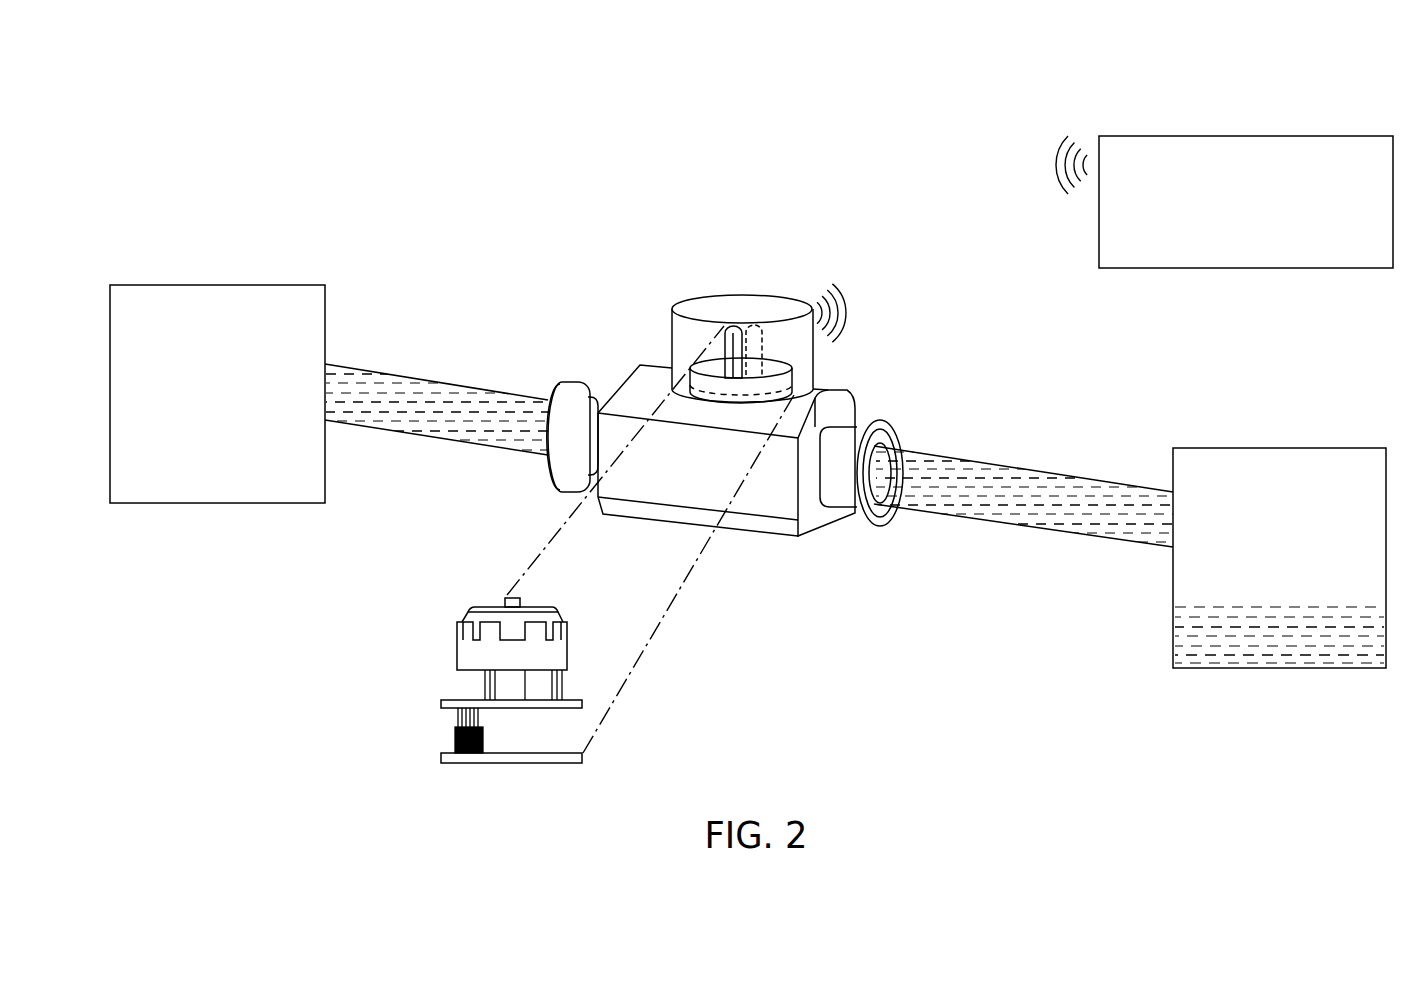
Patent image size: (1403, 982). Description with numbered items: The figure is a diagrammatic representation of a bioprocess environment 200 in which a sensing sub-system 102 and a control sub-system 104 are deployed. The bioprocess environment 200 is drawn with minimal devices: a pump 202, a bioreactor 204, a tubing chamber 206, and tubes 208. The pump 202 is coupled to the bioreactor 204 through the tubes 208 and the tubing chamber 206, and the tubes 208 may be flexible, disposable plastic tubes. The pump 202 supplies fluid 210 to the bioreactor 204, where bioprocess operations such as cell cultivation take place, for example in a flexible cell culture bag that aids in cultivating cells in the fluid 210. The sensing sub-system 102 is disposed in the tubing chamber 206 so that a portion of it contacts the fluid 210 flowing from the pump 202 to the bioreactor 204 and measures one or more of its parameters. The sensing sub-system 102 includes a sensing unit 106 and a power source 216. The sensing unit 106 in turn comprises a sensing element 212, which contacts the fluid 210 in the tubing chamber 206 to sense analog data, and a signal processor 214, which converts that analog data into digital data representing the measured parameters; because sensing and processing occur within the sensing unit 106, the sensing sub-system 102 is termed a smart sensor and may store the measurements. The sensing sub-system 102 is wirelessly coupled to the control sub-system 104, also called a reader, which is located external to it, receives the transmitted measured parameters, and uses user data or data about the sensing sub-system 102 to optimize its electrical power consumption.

The bioprocess environment 200 is at (292, 126).
The pump 202 is at (218, 285).
The bioreactor 204 is at (1268, 448).
The tubing chamber 206 is at (856, 401).
The tubes 208 is at (421, 378).
The fluid 210 is at (969, 497).
The sensing element 212 is at (462, 763).
The signal processor 214 is at (424, 729).
The power source 216 is at (424, 658).
The sensing sub-system 102 is at (523, 553).
The control sub-system 104 is at (1240, 136).
The sensing unit 106 is at (417, 740).